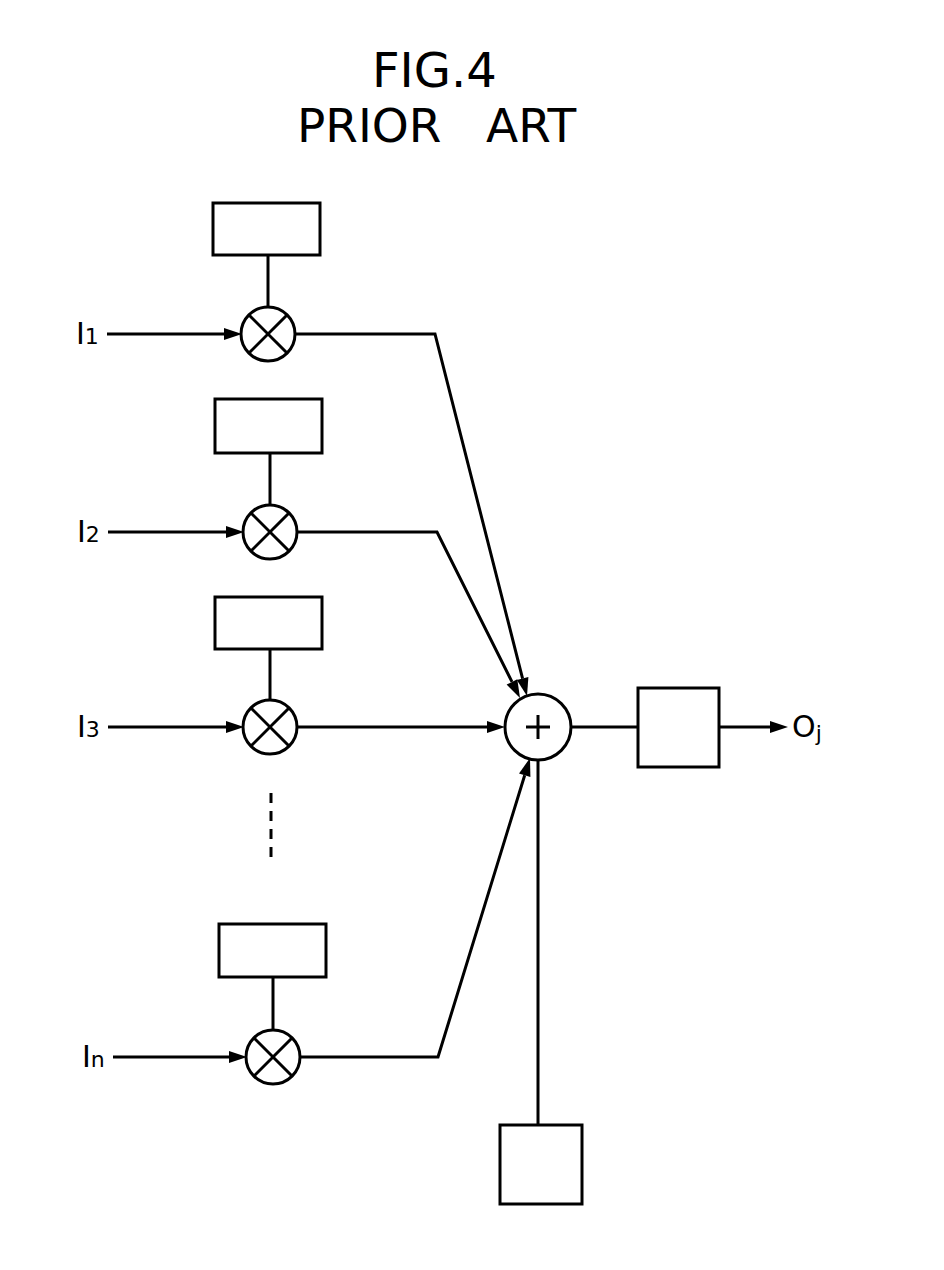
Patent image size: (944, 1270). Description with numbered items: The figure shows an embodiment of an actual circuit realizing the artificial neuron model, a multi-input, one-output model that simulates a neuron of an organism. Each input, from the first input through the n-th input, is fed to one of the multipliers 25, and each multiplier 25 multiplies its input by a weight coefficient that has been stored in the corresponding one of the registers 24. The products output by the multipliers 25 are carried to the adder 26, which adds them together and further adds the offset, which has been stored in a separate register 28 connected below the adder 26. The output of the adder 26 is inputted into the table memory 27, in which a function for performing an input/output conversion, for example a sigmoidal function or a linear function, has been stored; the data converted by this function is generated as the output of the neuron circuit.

The registers 24 is at (213, 222).
The multipliers 25 is at (249, 316).
The adder 26 is at (561, 698).
The table memory 27 is at (700, 688).
The register 28 is at (582, 1165).